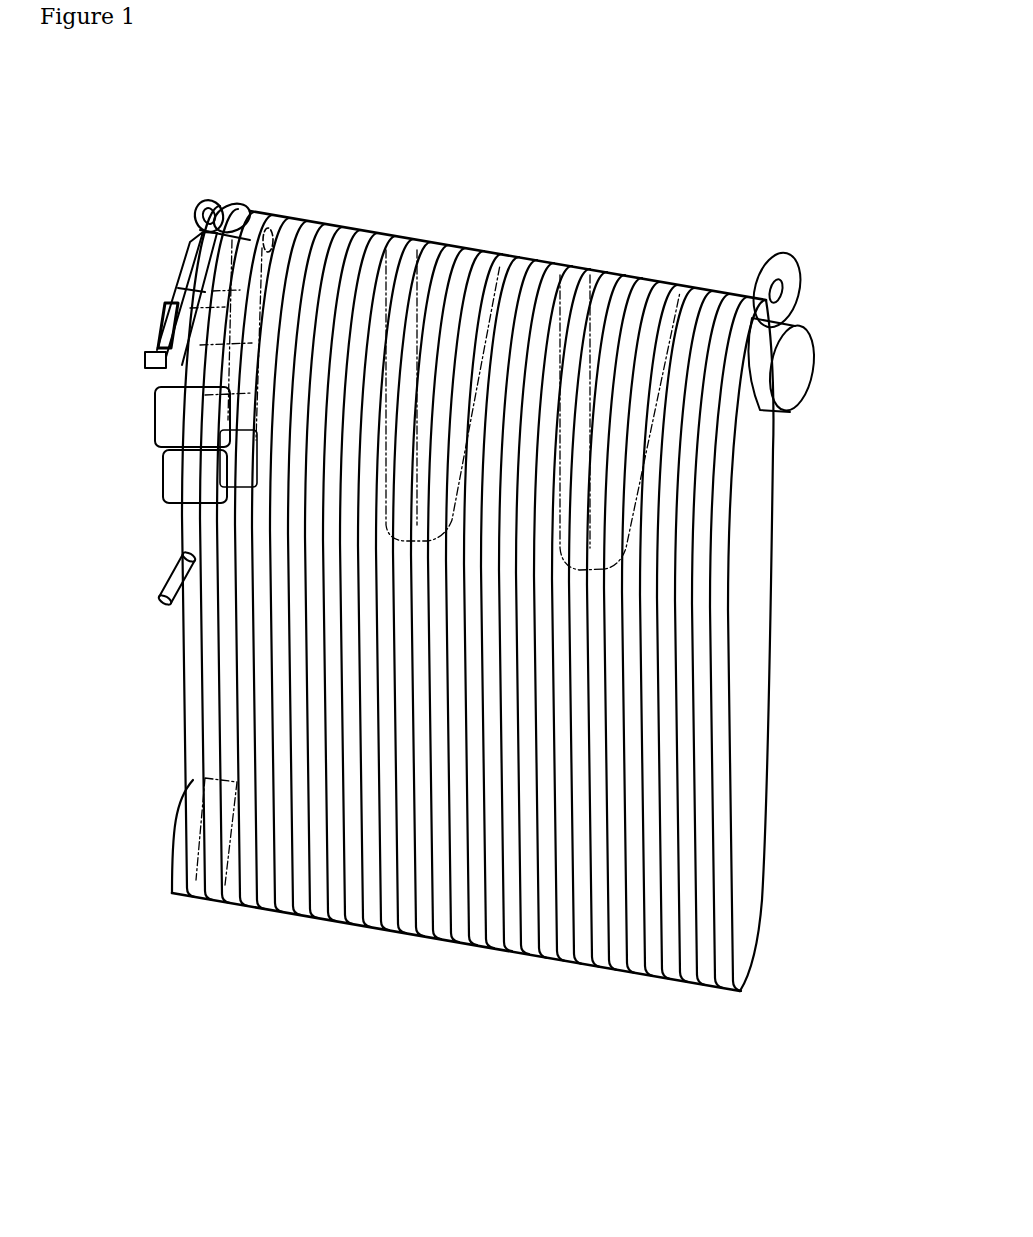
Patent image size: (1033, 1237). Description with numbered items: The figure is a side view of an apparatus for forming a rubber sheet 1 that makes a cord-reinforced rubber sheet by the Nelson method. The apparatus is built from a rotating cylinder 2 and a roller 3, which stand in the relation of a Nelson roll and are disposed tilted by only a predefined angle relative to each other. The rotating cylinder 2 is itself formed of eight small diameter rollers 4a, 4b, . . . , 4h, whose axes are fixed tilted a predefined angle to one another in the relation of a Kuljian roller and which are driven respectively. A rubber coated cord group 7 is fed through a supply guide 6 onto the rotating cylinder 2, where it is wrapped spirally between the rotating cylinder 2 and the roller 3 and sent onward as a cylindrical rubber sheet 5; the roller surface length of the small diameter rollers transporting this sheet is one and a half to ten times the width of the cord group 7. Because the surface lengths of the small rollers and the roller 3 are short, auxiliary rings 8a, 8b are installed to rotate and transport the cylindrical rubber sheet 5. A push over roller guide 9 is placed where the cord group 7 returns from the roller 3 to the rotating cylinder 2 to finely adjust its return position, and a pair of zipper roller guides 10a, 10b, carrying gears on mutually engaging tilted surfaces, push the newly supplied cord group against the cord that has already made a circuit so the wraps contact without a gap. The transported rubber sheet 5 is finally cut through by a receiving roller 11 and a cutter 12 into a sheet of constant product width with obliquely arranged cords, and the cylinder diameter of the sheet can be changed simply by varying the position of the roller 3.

The apparatus for forming a rubber sheet 1 is at (472, 571).
The rotating cylinder 2 is at (166, 298).
The roller 3 is at (168, 868).
The small diameter roller 4a is at (196, 213).
The small diameter roller 4b is at (178, 288).
The small diameter roller 4h is at (266, 222).
The cylindrical rubber sheet 5 is at (425, 870).
The supply guide 6 is at (160, 312).
The rubber coated cord group 7 is at (145, 356).
The auxiliary ring 8a is at (490, 262).
The auxiliary ring 8b is at (666, 288).
The push over roller guide 9 is at (170, 574).
The zipper roller guide 10a is at (204, 200).
The zipper roller guide 10b is at (237, 205).
The receiving roller 11 is at (790, 395).
The cutter 12 is at (793, 262).